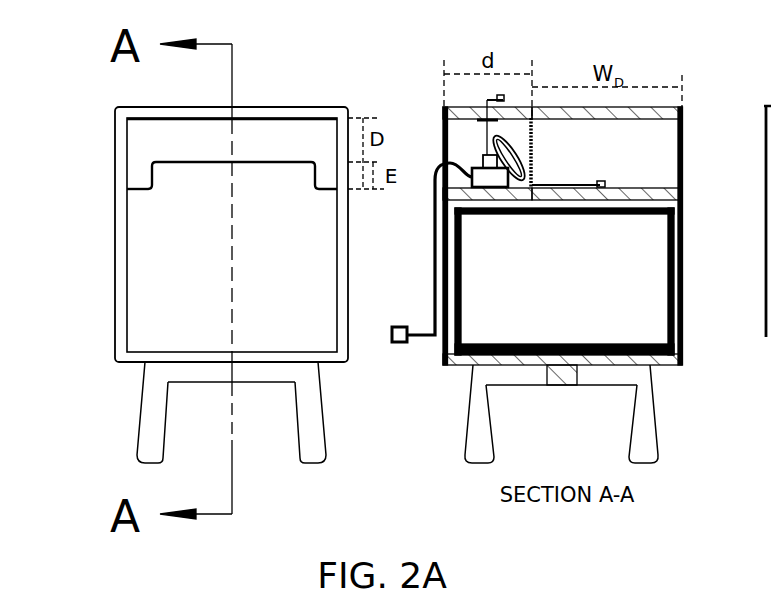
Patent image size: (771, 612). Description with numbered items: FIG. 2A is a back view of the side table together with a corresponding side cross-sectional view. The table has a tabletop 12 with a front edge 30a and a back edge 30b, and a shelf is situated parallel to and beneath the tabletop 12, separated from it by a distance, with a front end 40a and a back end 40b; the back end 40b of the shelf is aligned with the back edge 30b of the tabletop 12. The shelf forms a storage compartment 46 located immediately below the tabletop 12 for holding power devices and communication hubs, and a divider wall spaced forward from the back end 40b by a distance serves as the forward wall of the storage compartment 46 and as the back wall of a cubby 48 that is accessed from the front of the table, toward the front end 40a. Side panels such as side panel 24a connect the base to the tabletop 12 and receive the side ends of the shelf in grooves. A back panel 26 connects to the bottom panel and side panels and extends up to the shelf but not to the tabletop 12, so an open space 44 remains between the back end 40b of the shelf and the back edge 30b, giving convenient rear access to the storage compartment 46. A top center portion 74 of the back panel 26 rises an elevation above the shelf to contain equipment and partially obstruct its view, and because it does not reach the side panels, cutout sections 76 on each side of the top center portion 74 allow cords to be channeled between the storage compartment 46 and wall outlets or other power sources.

The tabletop 12 is at (770, 98).
The side panel 24a is at (770, 195).
The back panel 26 is at (152, 288).
The front edge 30a is at (683, 113).
The back edge 30b is at (445, 115).
The front end 40a is at (683, 191).
The back end 40b is at (448, 189).
The open space 44 is at (258, 142).
The storage compartment 46 is at (455, 145).
The cubby 48 is at (653, 163).
The top center portion 74 is at (167, 162).
The cutout sections 76 is at (140, 175).